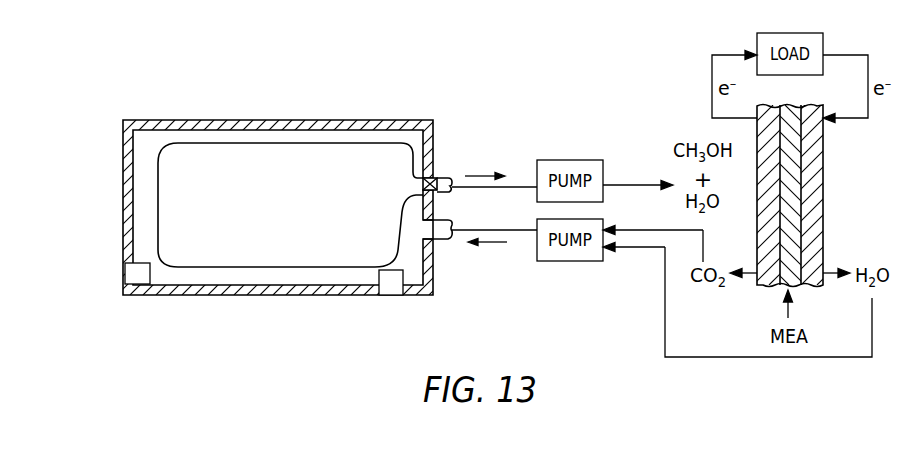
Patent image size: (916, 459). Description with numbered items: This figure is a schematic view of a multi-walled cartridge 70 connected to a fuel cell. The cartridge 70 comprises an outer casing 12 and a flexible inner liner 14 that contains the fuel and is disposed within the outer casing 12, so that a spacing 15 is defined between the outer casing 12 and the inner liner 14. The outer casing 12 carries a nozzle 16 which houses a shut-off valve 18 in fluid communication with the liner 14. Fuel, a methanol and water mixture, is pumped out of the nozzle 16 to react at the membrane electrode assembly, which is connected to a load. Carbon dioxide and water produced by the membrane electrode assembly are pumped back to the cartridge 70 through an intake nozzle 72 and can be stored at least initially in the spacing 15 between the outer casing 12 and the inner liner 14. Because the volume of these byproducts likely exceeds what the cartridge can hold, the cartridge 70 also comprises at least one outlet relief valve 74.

The cartridge 70 is at (170, 103).
The outer casing 12 is at (203, 127).
The inner liner 14 is at (281, 158).
The spacing 15 is at (152, 149).
The nozzle 16 is at (437, 178).
The shut-off valve 18 is at (447, 182).
The intake nozzle 72 is at (439, 235).
The outlet relief valve 74 is at (136, 275).